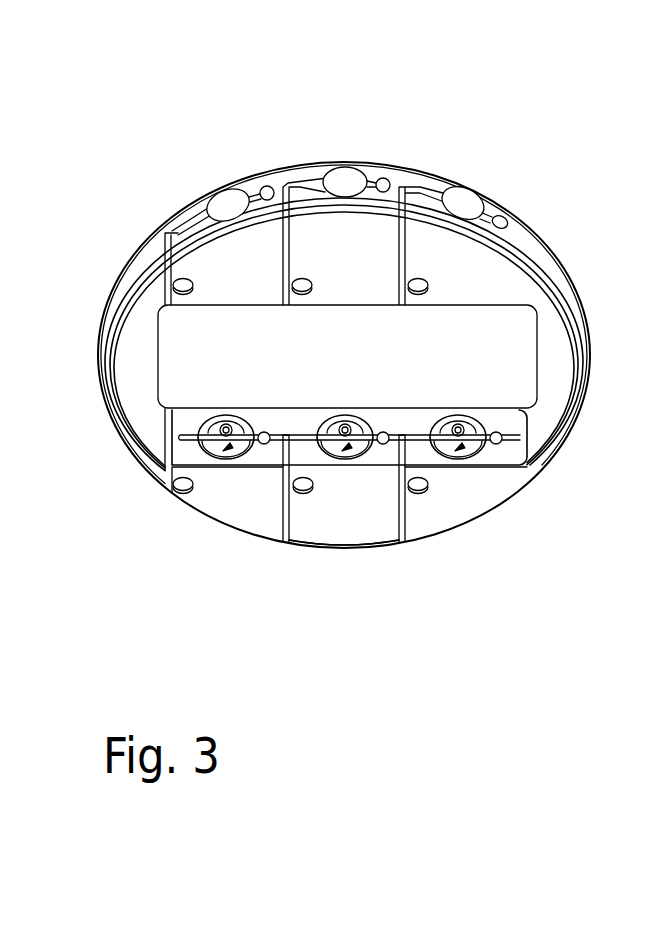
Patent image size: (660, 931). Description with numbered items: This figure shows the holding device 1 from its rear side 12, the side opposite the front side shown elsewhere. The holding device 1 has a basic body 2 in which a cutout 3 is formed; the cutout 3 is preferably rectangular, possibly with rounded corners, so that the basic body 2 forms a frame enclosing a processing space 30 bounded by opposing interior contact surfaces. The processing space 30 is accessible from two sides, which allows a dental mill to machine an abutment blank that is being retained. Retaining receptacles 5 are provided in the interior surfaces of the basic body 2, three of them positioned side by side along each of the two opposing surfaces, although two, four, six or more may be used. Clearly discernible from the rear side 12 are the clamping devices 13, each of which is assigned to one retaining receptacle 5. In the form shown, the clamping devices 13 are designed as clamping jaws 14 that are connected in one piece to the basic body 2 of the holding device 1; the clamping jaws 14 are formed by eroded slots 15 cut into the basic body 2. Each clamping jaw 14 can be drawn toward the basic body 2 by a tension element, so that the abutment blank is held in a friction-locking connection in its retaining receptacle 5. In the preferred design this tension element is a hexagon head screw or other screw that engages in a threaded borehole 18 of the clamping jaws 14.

The holding device 1 is at (143, 173).
The basic body 2 is at (528, 275).
The cutout 3 is at (522, 325).
The retaining receptacles 5 is at (234, 446).
The rear side 12 is at (477, 275).
The clamping devices 13 is at (350, 283).
The clamping jaws 14 is at (237, 282).
The eroded slots 15 is at (402, 503).
The threaded borehole 18 is at (423, 280).
The processing space 30 is at (527, 383).